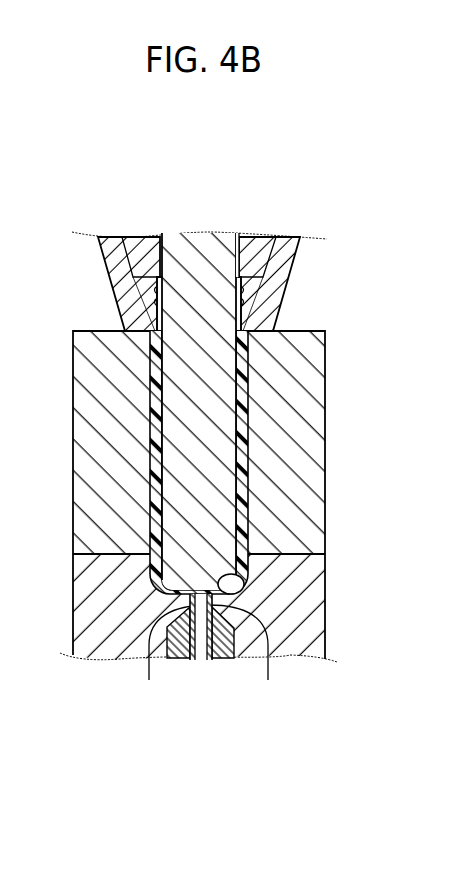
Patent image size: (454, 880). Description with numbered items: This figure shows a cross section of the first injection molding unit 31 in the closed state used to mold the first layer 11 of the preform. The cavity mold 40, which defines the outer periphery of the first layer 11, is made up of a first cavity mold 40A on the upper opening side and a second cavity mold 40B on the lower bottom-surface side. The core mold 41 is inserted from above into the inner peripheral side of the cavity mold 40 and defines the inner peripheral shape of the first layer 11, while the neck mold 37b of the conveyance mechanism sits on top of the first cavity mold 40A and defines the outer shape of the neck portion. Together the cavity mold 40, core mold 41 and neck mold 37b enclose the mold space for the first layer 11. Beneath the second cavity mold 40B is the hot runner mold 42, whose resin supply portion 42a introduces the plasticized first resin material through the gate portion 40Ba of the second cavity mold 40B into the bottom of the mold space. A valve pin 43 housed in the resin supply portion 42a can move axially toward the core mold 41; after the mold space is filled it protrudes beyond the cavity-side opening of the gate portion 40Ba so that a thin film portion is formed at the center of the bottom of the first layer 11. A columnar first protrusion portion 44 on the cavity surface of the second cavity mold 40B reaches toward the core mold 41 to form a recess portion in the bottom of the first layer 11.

The first layer 11 is at (258, 381).
The first injection molding unit 31 is at (297, 195).
The neck mold 37b is at (108, 284).
The cavity mold 40 is at (255, 495).
The first cavity mold 40A is at (330, 450).
The second cavity mold 40B is at (231, 607).
The gate portion 40Ba is at (268, 680).
The core mold 41 is at (241, 245).
The hot runner mold 42 is at (206, 676).
The resin supply portion 42a is at (212, 660).
The valve pin 43 is at (149, 680).
The first protrusion portion 44 is at (247, 580).